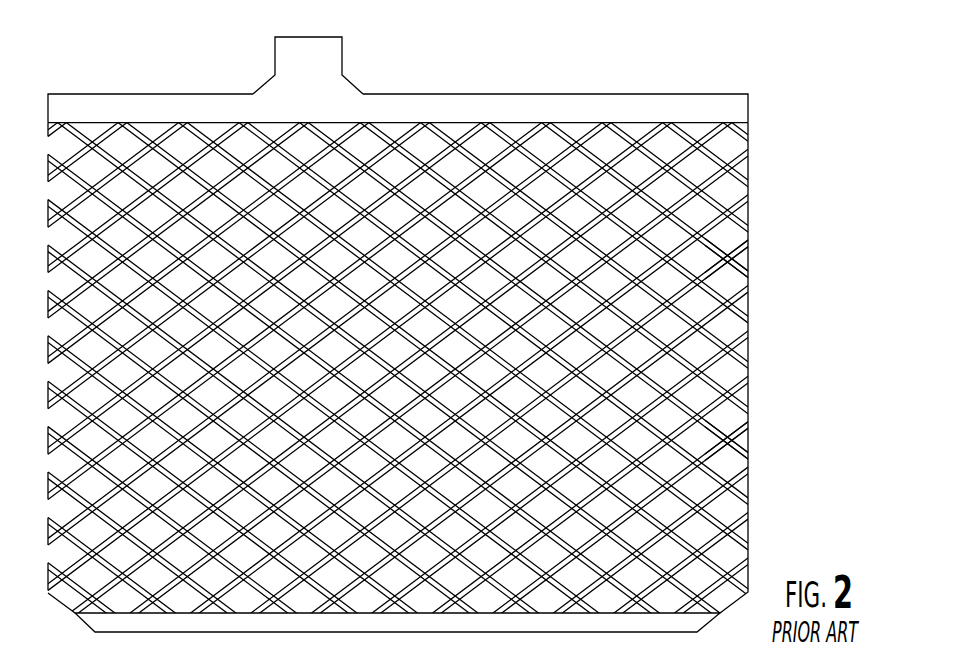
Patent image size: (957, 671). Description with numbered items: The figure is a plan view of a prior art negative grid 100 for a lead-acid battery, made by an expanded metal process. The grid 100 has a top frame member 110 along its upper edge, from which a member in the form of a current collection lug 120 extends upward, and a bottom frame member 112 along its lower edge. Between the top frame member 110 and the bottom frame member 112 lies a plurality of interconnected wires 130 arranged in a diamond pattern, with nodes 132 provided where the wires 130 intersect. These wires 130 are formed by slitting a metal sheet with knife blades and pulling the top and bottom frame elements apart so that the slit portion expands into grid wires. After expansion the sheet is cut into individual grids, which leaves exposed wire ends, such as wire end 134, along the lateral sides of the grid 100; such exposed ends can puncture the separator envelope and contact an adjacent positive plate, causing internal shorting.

The negative grid 100 is at (567, 95).
The top frame member 110 is at (668, 112).
The current collection lug 120 is at (342, 57).
The interconnected wires 130 is at (728, 348).
The nodes 132 is at (732, 440).
The wire end 134 is at (740, 252).
The bottom frame member 112 is at (563, 625).